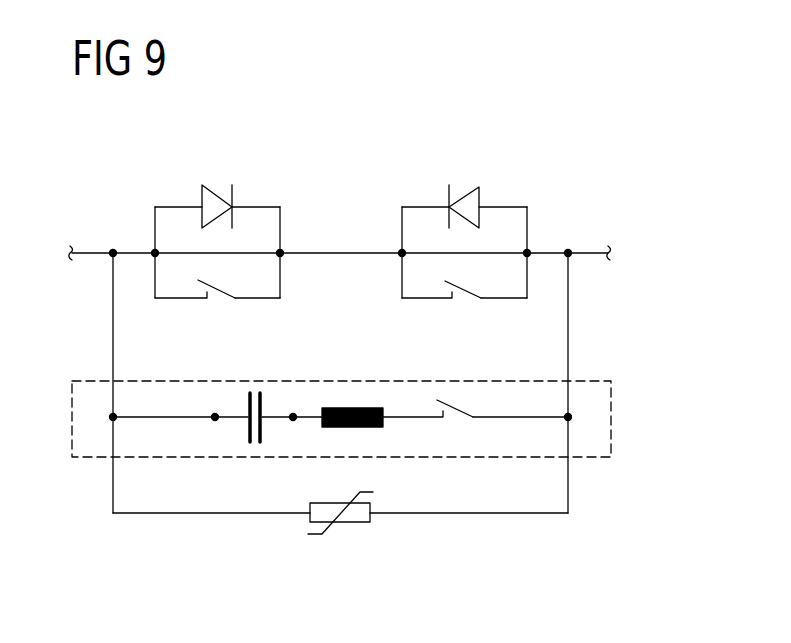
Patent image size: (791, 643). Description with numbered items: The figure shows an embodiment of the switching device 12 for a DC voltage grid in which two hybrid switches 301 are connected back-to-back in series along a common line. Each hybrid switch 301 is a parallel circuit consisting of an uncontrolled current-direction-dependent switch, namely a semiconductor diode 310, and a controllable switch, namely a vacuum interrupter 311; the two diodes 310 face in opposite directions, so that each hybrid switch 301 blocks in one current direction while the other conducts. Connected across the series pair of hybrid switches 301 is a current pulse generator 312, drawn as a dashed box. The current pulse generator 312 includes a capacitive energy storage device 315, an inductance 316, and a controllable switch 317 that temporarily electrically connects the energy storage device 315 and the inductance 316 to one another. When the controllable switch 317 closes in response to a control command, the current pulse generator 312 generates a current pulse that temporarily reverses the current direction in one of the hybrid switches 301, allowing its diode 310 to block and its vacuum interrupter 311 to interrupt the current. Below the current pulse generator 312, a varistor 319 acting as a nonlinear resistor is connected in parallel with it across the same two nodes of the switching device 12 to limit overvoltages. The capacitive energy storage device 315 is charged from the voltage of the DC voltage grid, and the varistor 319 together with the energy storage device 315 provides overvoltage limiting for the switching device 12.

The switching device 12 is at (372, 319).
The hybrid switch 301 is at (126, 189).
The semiconductor diode 310 is at (212, 193).
The vacuum interrupter 311 is at (223, 288).
The current pulse generator 312 is at (387, 477).
The capacitive energy storage device 315 is at (247, 435).
The inductance 316 is at (347, 427).
The controllable switch 317 is at (460, 412).
The varistor 319 is at (345, 523).